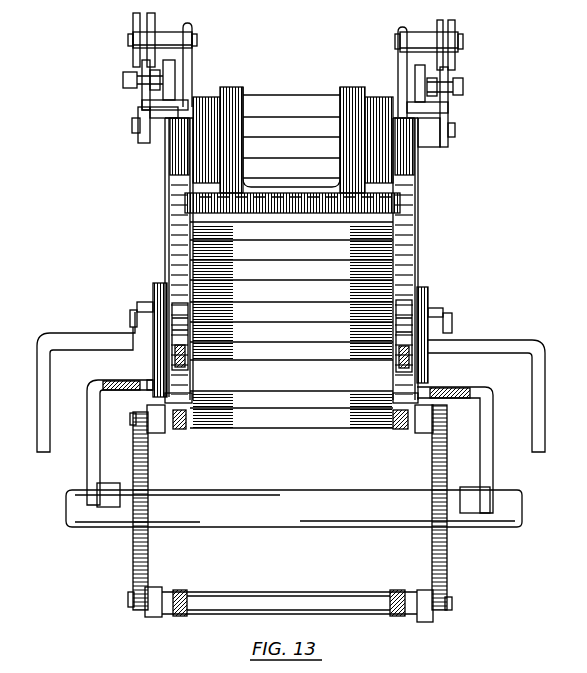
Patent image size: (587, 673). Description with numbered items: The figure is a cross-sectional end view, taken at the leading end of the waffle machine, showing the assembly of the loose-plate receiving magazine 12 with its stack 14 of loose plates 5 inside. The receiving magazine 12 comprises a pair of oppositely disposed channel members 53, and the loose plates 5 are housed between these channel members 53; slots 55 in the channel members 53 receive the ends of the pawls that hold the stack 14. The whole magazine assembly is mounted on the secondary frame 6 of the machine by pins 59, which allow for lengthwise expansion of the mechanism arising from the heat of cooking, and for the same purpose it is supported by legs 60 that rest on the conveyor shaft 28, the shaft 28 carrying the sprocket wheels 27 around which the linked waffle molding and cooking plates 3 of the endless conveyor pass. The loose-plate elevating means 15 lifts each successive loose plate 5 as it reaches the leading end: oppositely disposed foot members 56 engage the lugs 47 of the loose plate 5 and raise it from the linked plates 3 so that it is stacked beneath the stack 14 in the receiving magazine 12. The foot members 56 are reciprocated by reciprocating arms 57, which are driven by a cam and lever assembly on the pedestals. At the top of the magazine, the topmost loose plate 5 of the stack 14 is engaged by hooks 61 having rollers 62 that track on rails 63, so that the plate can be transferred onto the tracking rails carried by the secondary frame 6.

The linked waffle molding and cooking plates 3 is at (237, 420).
The loose complementary waffle molding and cooking plates 5 is at (217, 404).
The secondary frame 6 is at (449, 108).
The receiving magazine 12 is at (421, 248).
The stack of loose plates 14 is at (323, 102).
The loose-plate elevating means 15 is at (453, 307).
The sprocket wheels 27 is at (447, 560).
The shafts of the sprocket wheels 28 is at (485, 522).
The lugs 47 is at (190, 398).
The channel members 53 is at (166, 208).
The slots 55 is at (160, 292).
The foot members 56 is at (173, 404).
The reciprocating arms 57 is at (93, 336).
The pins 59 is at (456, 132).
The legs 60 is at (486, 456).
The hooks 61 is at (189, 88).
The rollers 62 is at (132, 58).
The rails 63 is at (140, 93).